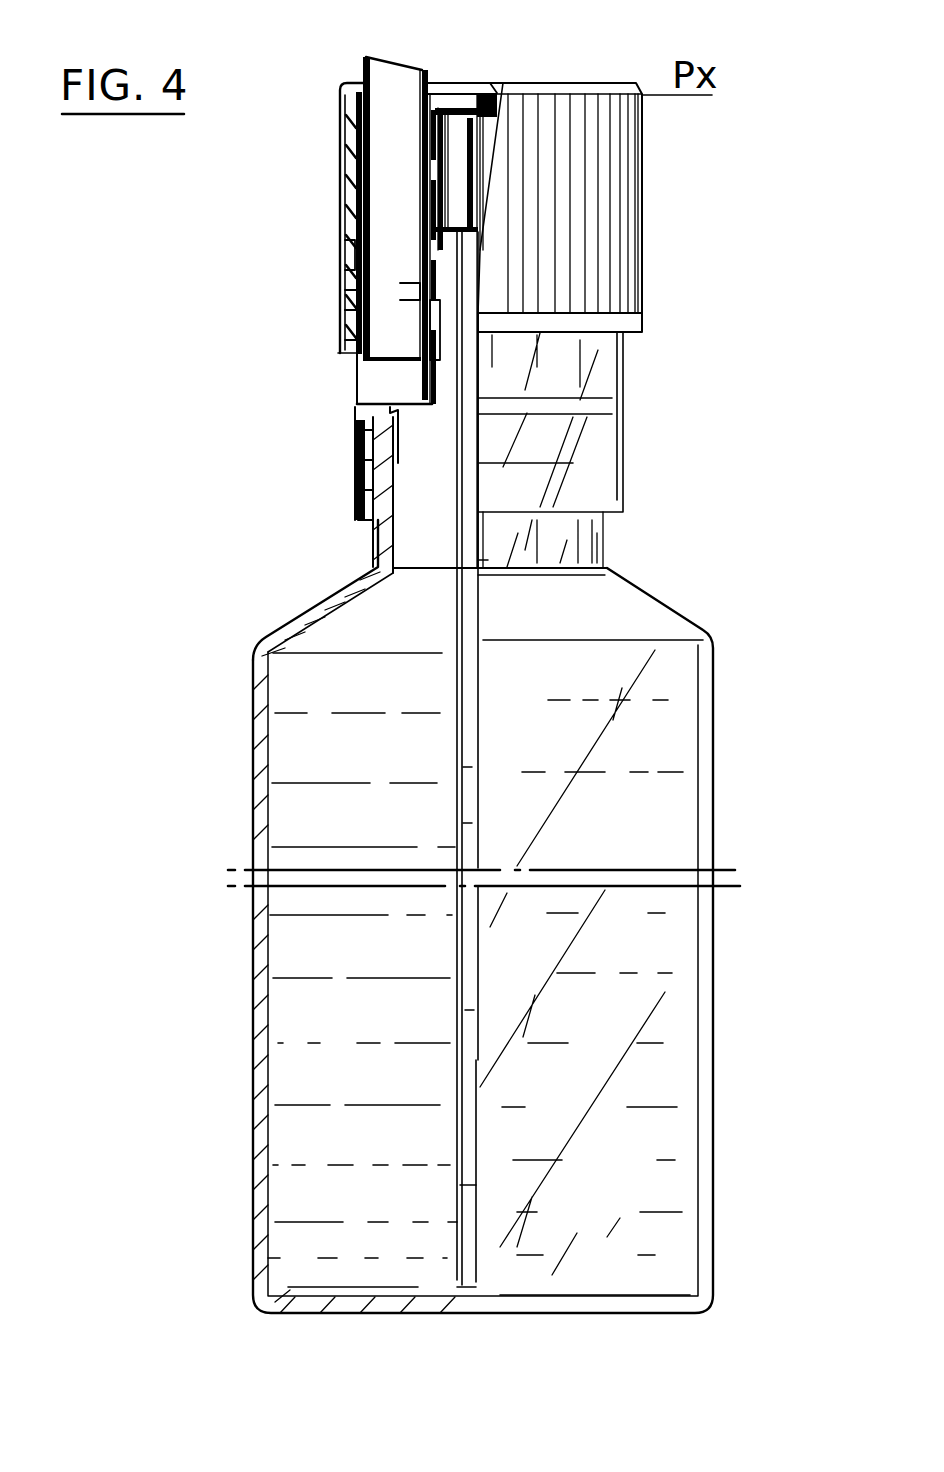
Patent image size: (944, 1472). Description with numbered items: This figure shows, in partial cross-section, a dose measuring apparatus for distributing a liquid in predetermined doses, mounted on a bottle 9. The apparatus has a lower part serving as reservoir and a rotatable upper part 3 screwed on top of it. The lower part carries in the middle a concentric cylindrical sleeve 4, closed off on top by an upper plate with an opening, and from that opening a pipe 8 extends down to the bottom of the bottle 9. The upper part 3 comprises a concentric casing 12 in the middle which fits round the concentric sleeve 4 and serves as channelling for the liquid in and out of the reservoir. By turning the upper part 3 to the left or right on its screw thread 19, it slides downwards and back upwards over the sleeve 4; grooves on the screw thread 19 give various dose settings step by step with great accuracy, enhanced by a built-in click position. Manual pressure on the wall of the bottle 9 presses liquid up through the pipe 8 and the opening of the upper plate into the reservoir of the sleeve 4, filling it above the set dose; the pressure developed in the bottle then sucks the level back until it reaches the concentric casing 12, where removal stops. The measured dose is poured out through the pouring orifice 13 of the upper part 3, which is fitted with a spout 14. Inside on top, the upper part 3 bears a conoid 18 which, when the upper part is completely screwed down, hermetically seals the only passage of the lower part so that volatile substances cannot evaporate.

The rotatable upper part 3 is at (641, 199).
The concentric sleeve 4 is at (440, 288).
The pipe 8 is at (463, 227).
The bottle 9 is at (718, 770).
The concentric casing 12 is at (420, 284).
The pouring orifice 13 is at (395, 88).
The spout 14 is at (366, 60).
The conoid 18 is at (492, 95).
The screw thread 19 is at (340, 270).